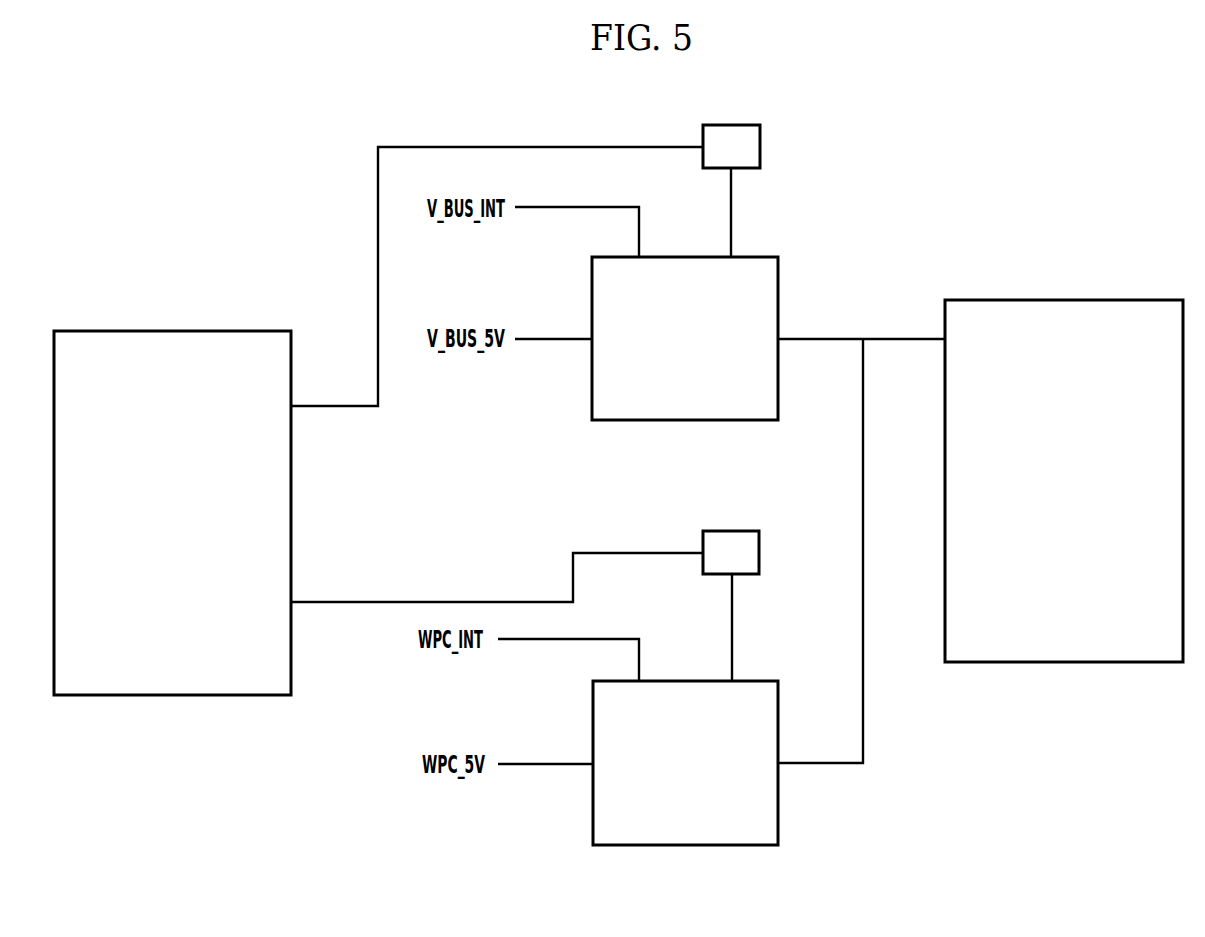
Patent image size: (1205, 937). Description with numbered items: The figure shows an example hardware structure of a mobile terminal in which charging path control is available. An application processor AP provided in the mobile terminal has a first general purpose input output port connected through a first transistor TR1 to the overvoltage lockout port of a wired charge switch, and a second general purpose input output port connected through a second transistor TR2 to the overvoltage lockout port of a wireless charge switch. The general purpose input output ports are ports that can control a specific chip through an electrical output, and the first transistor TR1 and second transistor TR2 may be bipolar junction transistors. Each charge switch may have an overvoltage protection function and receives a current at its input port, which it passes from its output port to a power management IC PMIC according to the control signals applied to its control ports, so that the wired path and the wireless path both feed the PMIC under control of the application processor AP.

The application processor AP is at (172, 331).
The first transistor TR1 is at (735, 125).
The second transistor TR2 is at (733, 531).
The power management IC PMIC is at (1063, 300).